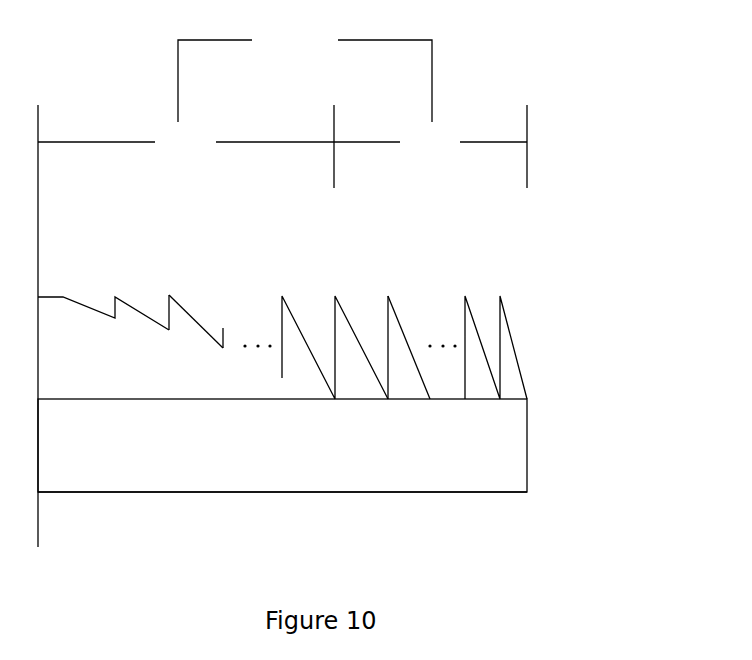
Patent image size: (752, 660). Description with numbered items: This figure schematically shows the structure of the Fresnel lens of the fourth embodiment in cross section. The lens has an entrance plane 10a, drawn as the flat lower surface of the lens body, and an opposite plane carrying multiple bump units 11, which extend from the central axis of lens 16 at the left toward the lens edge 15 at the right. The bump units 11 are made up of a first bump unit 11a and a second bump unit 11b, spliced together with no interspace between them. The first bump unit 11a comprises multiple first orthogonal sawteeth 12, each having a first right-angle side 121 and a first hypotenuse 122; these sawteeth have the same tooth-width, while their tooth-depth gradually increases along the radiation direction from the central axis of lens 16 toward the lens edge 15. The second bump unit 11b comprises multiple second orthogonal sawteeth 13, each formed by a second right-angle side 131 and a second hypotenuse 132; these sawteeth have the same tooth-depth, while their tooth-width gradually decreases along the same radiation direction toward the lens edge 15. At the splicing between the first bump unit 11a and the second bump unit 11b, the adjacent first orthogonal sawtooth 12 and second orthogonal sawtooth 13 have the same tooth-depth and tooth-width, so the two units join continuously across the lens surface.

The entrance plane 10a is at (427, 493).
The bump units 11 is at (305, 72).
The first bump unit 11a is at (186, 146).
The second bump unit 11b is at (430, 146).
The first orthogonal sawteeth 12 is at (196, 275).
The first right-angle side 121 is at (167, 306).
The first hypotenuse 122 is at (190, 312).
The second orthogonal sawteeth 13 is at (410, 299).
The second right-angle side 131 is at (387, 332).
The second hypotenuse 132 is at (407, 342).
The lens edge 15 is at (527, 443).
The central axis of lens 16 is at (38, 505).